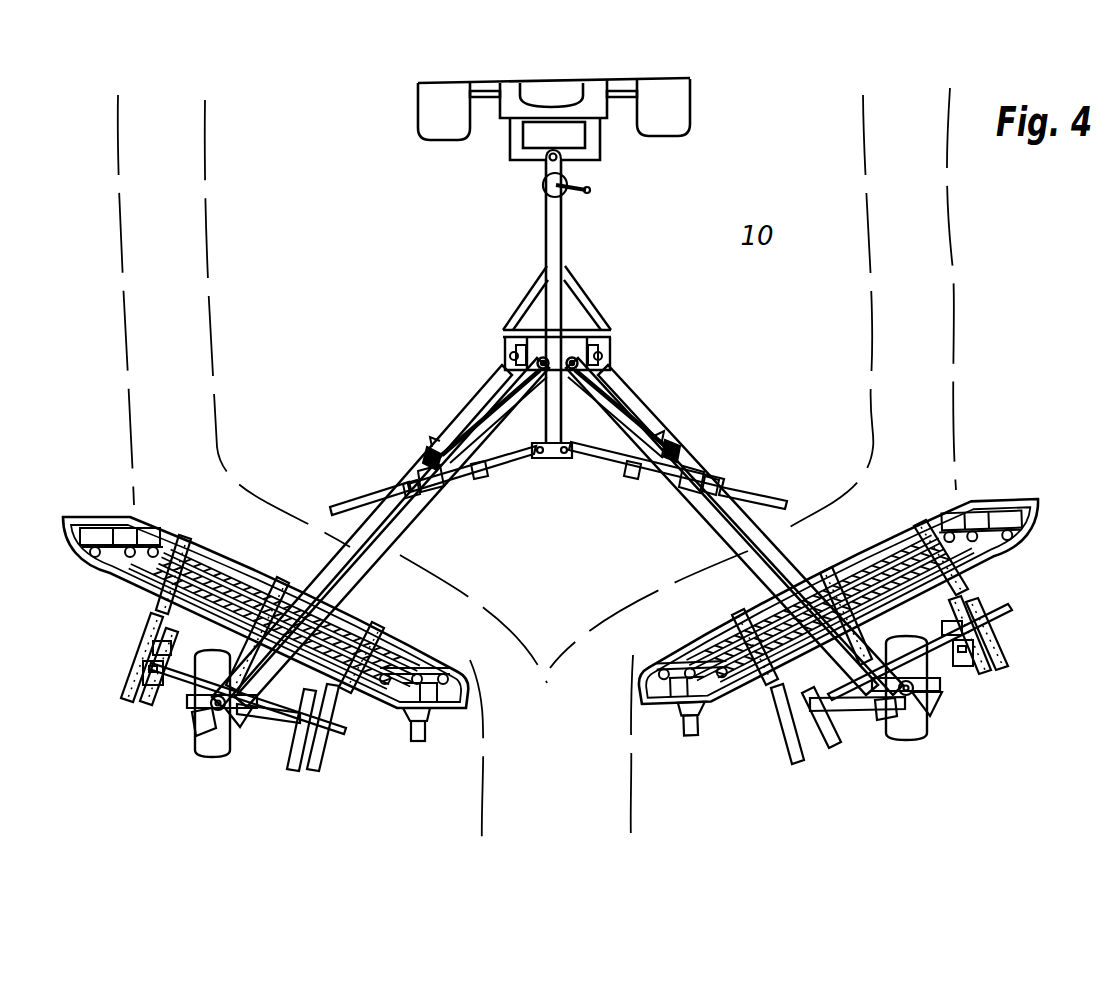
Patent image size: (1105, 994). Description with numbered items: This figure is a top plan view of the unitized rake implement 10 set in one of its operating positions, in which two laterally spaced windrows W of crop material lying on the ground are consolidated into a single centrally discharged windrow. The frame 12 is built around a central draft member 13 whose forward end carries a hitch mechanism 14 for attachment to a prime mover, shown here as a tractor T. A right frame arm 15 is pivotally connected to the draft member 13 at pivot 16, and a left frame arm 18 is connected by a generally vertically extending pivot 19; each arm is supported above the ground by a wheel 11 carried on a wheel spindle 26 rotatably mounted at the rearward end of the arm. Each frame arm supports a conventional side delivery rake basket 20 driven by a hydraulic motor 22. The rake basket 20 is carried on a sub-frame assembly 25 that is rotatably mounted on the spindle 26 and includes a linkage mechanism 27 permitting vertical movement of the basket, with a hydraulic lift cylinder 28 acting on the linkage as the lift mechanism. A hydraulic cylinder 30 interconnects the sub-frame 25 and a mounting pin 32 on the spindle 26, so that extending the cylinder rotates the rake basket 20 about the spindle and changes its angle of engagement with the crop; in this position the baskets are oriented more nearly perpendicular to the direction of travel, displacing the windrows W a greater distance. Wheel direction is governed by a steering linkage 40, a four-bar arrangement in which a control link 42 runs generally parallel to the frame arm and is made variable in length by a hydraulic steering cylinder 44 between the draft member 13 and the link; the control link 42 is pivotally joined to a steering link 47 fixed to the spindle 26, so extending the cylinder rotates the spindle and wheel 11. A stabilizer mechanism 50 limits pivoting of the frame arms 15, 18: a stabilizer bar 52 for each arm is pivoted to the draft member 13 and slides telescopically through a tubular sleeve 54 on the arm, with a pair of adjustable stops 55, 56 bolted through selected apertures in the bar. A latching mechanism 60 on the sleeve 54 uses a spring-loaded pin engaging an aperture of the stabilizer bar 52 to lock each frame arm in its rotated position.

The tractor T is at (677, 103).
The windrows W is at (178, 218).
The unitized rake implement 10 is at (126, 300).
The wheel 11 is at (228, 745).
The frame 12 is at (518, 272).
The central draft member 13 is at (558, 232).
The hitch mechanism 14 is at (564, 160).
The right frame arm 15 is at (648, 402).
The pivot 16 is at (606, 352).
The left frame arm 18 is at (463, 403).
The pivot 19 is at (512, 356).
The side delivery rake basket 20 is at (100, 516).
The hydraulic motor 22 is at (420, 738).
The sub-frame assembly 25 is at (178, 668).
The wheel spindle 26 is at (223, 732).
The linkage mechanism 27 is at (155, 617).
The hydraulic lift cylinder 28 is at (168, 678).
The hydraulic cylinder 30 is at (225, 747).
The mounting pin 32 is at (196, 727).
The steering linkage 40 is at (685, 414).
The control link 42 is at (403, 533).
The hydraulic steering cylinder 44 is at (512, 393).
The steering link 47 is at (240, 722).
The stabilizer mechanism 50 is at (578, 503).
The stabilizer bar 52 is at (366, 505).
The tubular sleeve 54 is at (413, 478).
The adjustable stop 55 is at (483, 479).
The adjustable stop 56 is at (410, 491).
The latching mechanism 60 is at (428, 455).